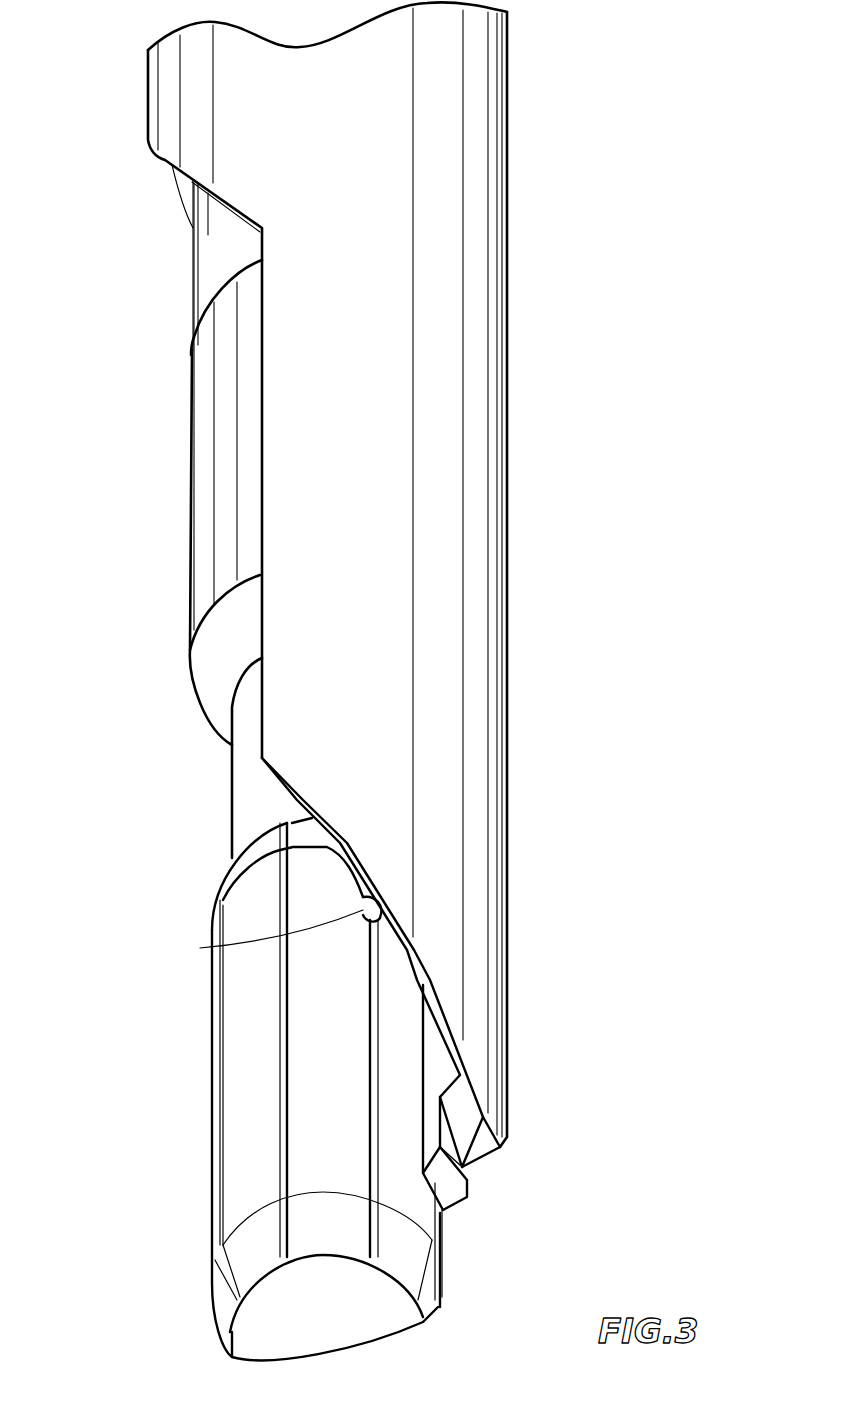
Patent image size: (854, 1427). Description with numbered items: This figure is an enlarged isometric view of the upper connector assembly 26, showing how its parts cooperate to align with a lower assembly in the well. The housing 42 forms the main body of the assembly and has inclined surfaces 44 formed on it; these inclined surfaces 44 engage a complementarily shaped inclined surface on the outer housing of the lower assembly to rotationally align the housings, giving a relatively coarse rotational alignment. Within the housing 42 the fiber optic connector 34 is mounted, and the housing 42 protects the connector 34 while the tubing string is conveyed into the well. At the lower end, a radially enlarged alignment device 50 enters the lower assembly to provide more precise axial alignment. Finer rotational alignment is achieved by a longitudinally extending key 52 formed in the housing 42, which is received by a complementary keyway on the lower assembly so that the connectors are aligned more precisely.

The upper connector assembly 26 is at (657, 298).
The housing 42 is at (508, 535).
The inclined surfaces 44 is at (228, 207).
The fiber optic connector 34 is at (363, 908).
The alignment device 50 is at (213, 1100).
The key 52 is at (475, 1178).